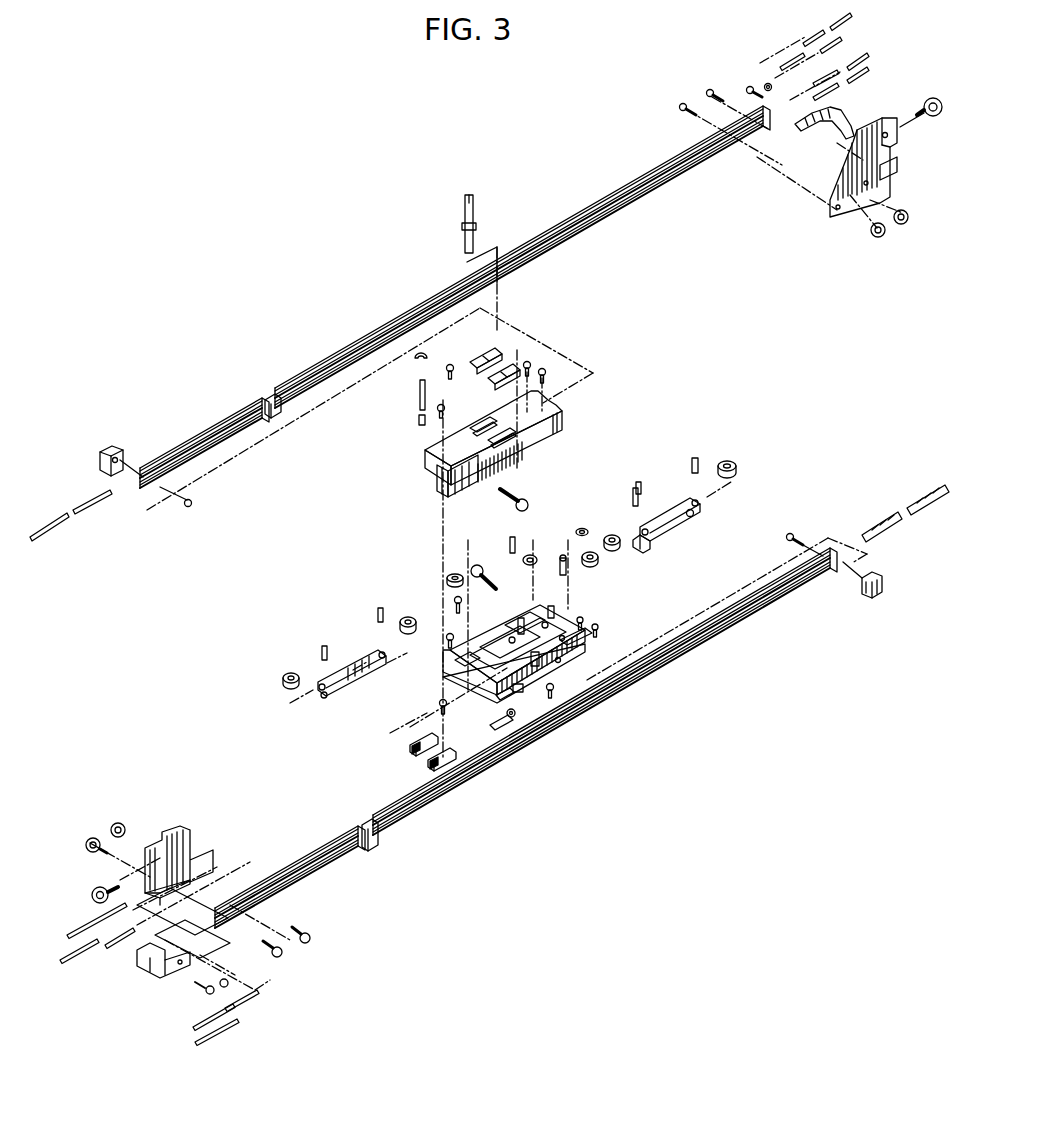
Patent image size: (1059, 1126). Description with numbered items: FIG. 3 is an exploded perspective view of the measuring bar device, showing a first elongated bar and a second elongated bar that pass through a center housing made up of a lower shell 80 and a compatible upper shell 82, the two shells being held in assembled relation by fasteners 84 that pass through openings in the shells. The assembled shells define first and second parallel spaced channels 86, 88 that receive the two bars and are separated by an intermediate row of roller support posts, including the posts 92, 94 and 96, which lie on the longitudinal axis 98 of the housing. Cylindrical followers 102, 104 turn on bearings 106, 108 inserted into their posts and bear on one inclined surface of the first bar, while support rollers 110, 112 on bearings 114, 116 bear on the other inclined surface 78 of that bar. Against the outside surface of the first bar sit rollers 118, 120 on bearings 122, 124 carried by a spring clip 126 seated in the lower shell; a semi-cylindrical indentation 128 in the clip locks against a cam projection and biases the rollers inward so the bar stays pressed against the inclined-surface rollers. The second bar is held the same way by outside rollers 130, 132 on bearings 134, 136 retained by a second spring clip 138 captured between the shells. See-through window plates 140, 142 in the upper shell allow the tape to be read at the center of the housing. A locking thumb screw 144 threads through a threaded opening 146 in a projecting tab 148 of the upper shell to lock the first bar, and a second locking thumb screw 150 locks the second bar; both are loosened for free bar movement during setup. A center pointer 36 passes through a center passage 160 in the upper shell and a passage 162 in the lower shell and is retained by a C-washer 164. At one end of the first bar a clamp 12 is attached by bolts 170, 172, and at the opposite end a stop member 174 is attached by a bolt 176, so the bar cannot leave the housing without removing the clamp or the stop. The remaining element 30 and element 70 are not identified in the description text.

The clamp 12 is at (196, 850).
The carriage 30 is at (548, 655).
The center pointer 36 is at (474, 207).
The guide rail 70 is at (226, 434).
The inclined surface 78 is at (215, 905).
The lower shell 80 is at (577, 657).
The upper shell 82 is at (560, 406).
The fasteners 84 is at (443, 375).
The first channel 86 is at (579, 621).
The second channel 88 is at (450, 683).
The roller support post 92 is at (498, 718).
The roller support post 94 is at (535, 668).
The roller support post 96 is at (560, 662).
The longitudinal axis 98 is at (415, 737).
The cylindrical roller 102 is at (510, 540).
The cylindrical roller 104 is at (610, 533).
The bearing 106 is at (528, 568).
The bearing 108 is at (597, 560).
The support roller 110 is at (448, 574).
The support roller 112 is at (583, 520).
The bearing 114 is at (455, 600).
The bearing 116 is at (566, 558).
The roller 118 is at (275, 388).
The roller 120 is at (736, 468).
The bearing 122 is at (641, 490).
The bearing 124 is at (698, 460).
The spring clip 126 is at (690, 518).
The semi-cylindrical indentation 128 is at (672, 540).
The outside roller 130 is at (287, 672).
The outside roller 132 is at (405, 615).
The bearing 134 is at (328, 648).
The bearing 136 is at (377, 614).
The spring clip 138 is at (340, 690).
The see-through window plate 140 is at (513, 360).
The see-through window plate 142 is at (493, 353).
The locking thumb screw 144 is at (512, 488).
The threaded opening 146 is at (452, 490).
The projecting flange or tab 148 is at (468, 497).
The locking thumb screw 150 is at (478, 565).
The center passage 160 is at (483, 442).
The center passage 162 is at (518, 692).
The C-washer 164 is at (503, 700).
The bolt 170 is at (280, 957).
The bolt 172 is at (308, 943).
The stop member 174 is at (883, 578).
The bolt 176 is at (795, 533).